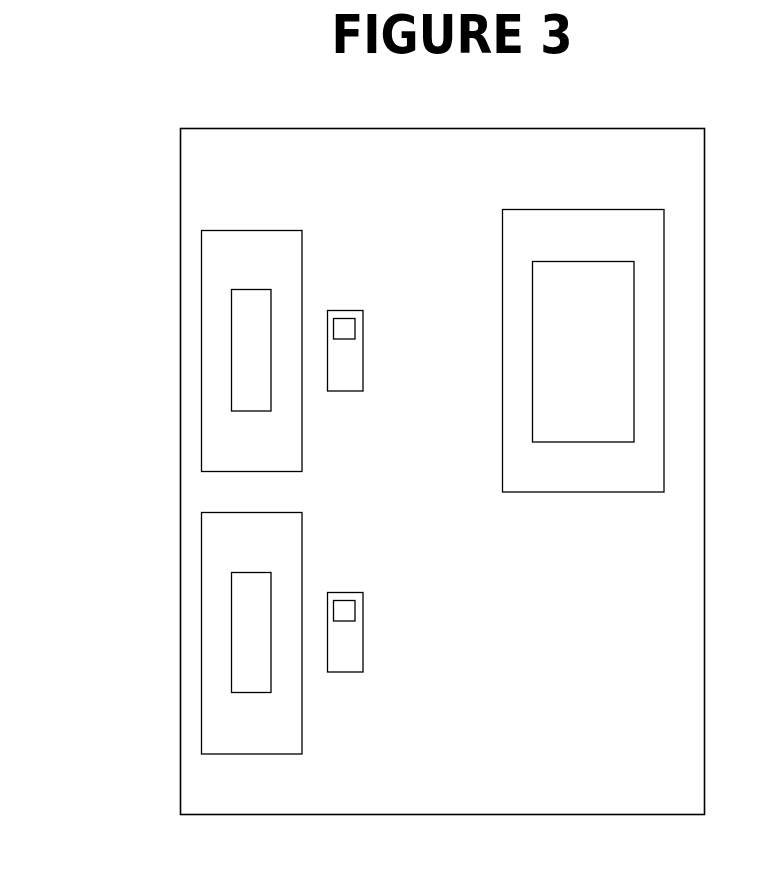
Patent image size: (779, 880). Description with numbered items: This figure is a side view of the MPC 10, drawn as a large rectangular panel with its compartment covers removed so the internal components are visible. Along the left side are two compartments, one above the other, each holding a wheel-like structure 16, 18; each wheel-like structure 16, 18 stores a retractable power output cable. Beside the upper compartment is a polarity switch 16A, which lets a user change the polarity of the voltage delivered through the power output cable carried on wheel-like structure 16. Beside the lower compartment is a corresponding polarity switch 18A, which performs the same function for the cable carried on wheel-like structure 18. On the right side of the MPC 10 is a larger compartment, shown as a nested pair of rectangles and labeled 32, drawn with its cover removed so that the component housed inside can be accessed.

The MPC 10 is at (161, 189).
The wheel-like structure 16 is at (231, 352).
The polarity switch 16A is at (363, 351).
The wheel-like structure 18 is at (231, 634).
The polarity switch 18A is at (363, 633).
The display component 32 is at (634, 351).